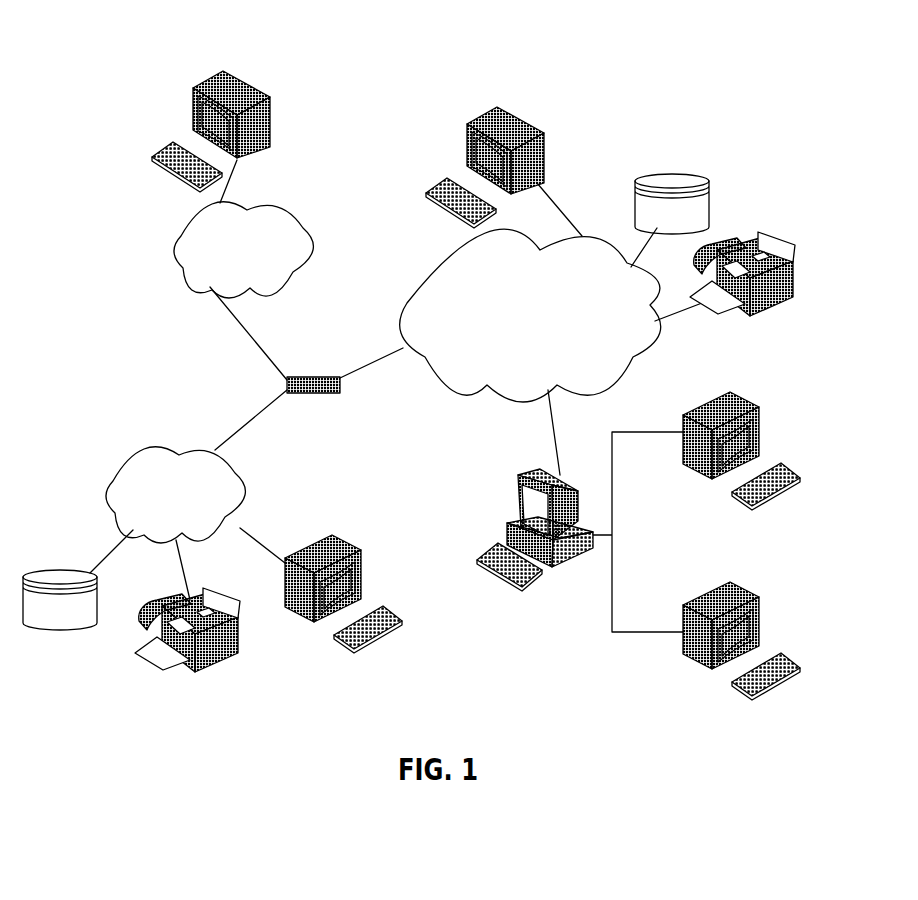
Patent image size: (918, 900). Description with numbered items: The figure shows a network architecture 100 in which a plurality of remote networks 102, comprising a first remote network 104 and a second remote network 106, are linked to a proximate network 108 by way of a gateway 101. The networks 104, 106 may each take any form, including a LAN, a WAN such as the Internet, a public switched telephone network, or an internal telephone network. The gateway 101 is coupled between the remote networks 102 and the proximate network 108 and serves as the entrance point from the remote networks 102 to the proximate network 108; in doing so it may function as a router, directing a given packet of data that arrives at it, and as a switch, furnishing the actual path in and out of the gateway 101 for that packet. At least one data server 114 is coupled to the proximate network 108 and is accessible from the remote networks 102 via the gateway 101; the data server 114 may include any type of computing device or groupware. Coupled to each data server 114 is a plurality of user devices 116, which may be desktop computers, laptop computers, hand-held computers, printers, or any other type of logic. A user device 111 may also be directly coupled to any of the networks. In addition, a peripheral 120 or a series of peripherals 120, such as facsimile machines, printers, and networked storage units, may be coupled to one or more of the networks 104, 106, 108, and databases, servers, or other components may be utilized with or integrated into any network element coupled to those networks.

The architecture 100 is at (141, 61).
The gateway 101 is at (294, 377).
The remote networks 102 is at (168, 296).
The first remote network 104 is at (112, 473).
The second remote network 106 is at (307, 221).
The proximate network 108 is at (630, 374).
The user device 111 is at (543, 136).
The data server 114 is at (517, 491).
The user devices 116 is at (270, 107).
The peripheral 120 is at (708, 182).